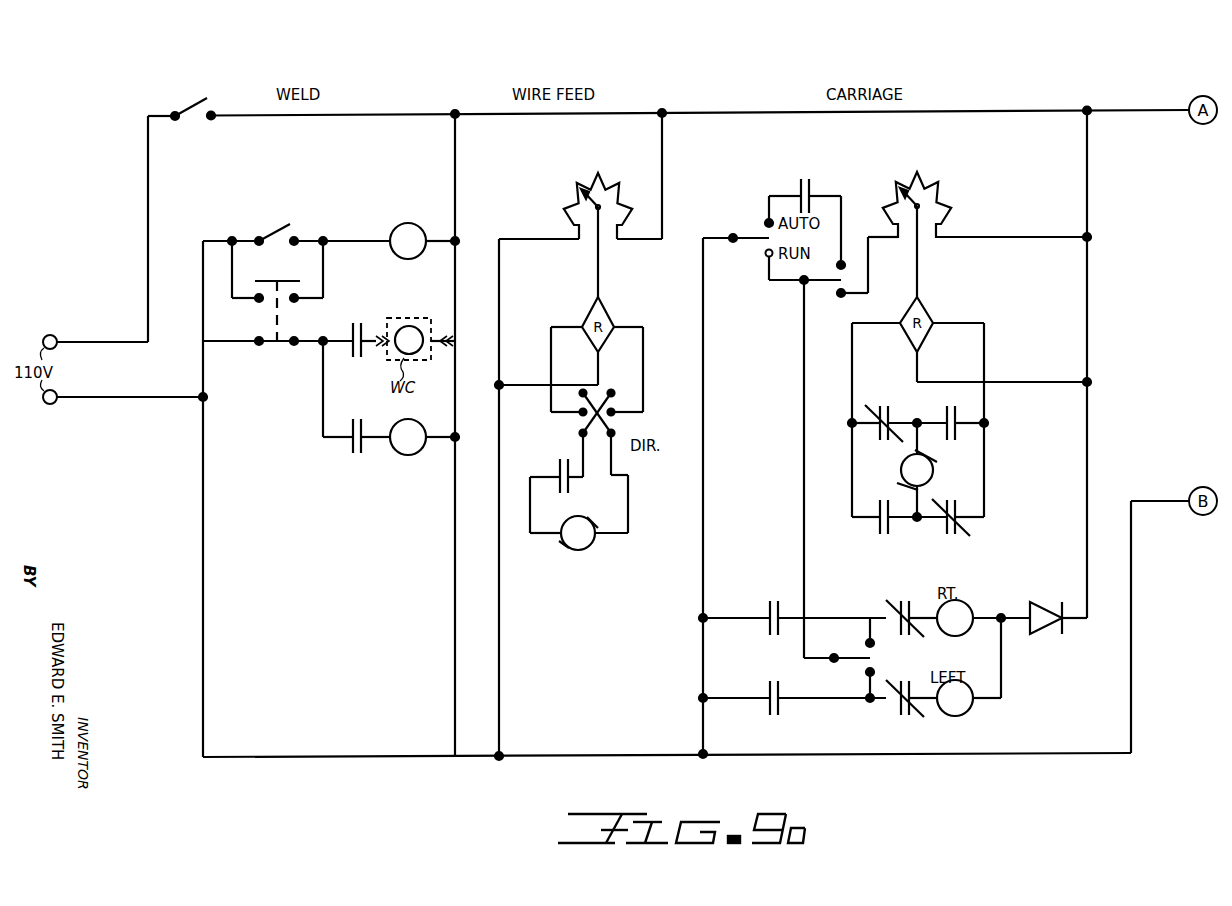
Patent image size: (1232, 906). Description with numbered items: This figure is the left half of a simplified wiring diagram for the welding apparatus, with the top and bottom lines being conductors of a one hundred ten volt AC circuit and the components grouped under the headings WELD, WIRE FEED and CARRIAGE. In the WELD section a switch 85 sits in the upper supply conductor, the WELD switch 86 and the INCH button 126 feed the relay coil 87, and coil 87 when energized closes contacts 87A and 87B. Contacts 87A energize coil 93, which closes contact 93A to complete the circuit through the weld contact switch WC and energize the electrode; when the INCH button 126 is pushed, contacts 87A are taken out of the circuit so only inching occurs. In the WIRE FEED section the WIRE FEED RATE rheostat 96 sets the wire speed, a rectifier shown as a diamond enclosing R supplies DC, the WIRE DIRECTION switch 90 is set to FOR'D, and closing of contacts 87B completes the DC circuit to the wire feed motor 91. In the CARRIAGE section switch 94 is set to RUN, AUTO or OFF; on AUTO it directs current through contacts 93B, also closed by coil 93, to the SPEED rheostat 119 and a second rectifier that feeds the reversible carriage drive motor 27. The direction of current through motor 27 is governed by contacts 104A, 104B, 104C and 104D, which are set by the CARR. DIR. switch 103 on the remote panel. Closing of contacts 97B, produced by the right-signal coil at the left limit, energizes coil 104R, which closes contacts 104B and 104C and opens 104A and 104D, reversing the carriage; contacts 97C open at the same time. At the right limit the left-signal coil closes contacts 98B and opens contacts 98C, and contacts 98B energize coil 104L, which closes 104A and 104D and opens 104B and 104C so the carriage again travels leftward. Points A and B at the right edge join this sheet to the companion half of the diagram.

The main power switch 85 is at (200, 97).
The weld switch 86 is at (278, 224).
The relay coil 87 is at (408, 223).
The inch button 126 is at (290, 280).
The relay contact 93A is at (353, 323).
The relay contacts 87A is at (357, 456).
The relay coil 93 is at (416, 451).
The wire feed rate rheostat 96 is at (578, 188).
The wire direction switch 90 is at (620, 423).
The relay contacts 87B is at (561, 458).
The wire feed motor 91 is at (588, 548).
The run/auto switch 94 is at (750, 233).
The relay contacts 93B is at (804, 178).
The speed rheostat 119 is at (944, 187).
The relay contacts 104A is at (885, 405).
The relay contacts 104B is at (956, 405).
The carriage drive motor 27 is at (933, 466).
The relay contacts 104C is at (884, 536).
The relay contacts 104D is at (950, 538).
The relay contacts 97B is at (771, 599).
The relay contacts 98C is at (903, 599).
The right relay coil 104R is at (992, 600).
The carriage direction switch 103 is at (860, 668).
The relay contacts 98B is at (771, 679).
The relay contacts 97C is at (903, 720).
The left relay coil 104L is at (966, 709).